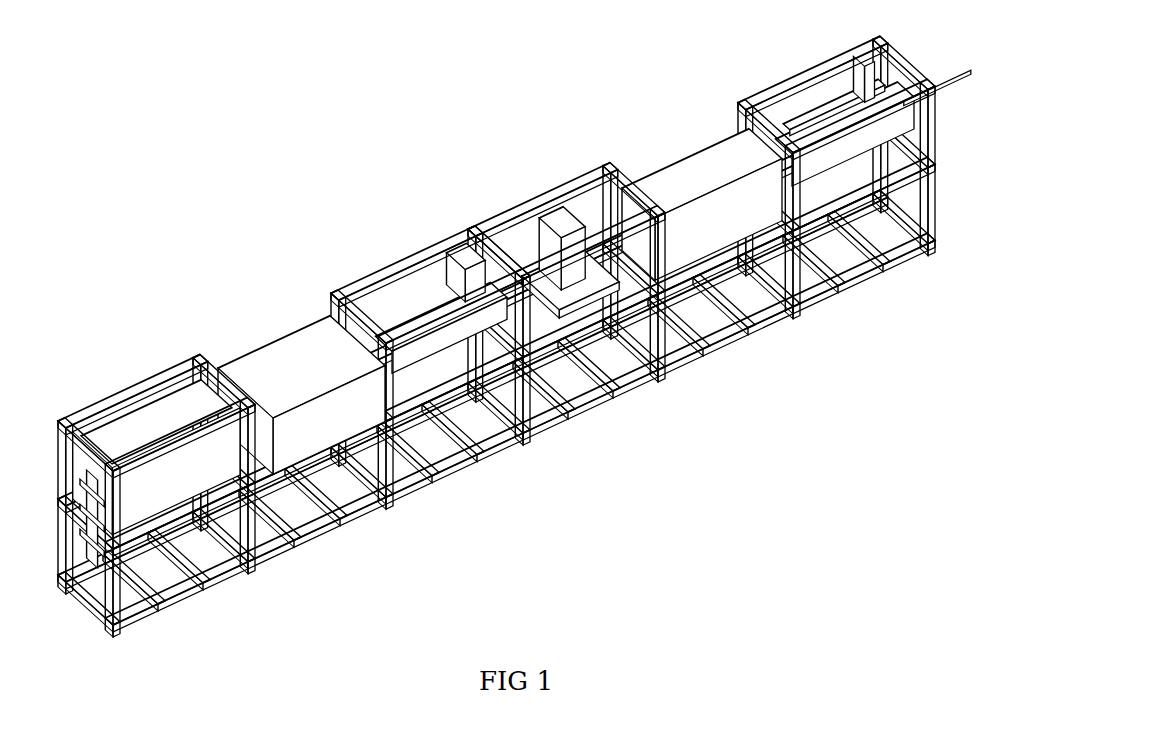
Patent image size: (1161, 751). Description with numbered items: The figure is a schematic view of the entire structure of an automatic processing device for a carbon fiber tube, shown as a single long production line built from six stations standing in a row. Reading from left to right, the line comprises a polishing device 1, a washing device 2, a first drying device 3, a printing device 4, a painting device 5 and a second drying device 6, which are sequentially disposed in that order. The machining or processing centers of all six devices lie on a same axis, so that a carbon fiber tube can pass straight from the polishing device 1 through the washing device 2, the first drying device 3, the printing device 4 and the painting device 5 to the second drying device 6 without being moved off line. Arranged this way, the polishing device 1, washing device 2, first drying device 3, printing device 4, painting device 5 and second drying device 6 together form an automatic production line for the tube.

The polishing device 1 is at (167, 400).
The washing device 2 is at (283, 350).
The first drying device 3 is at (423, 287).
The printing device 4 is at (525, 233).
The painting device 5 is at (692, 183).
The second drying device 6 is at (793, 113).